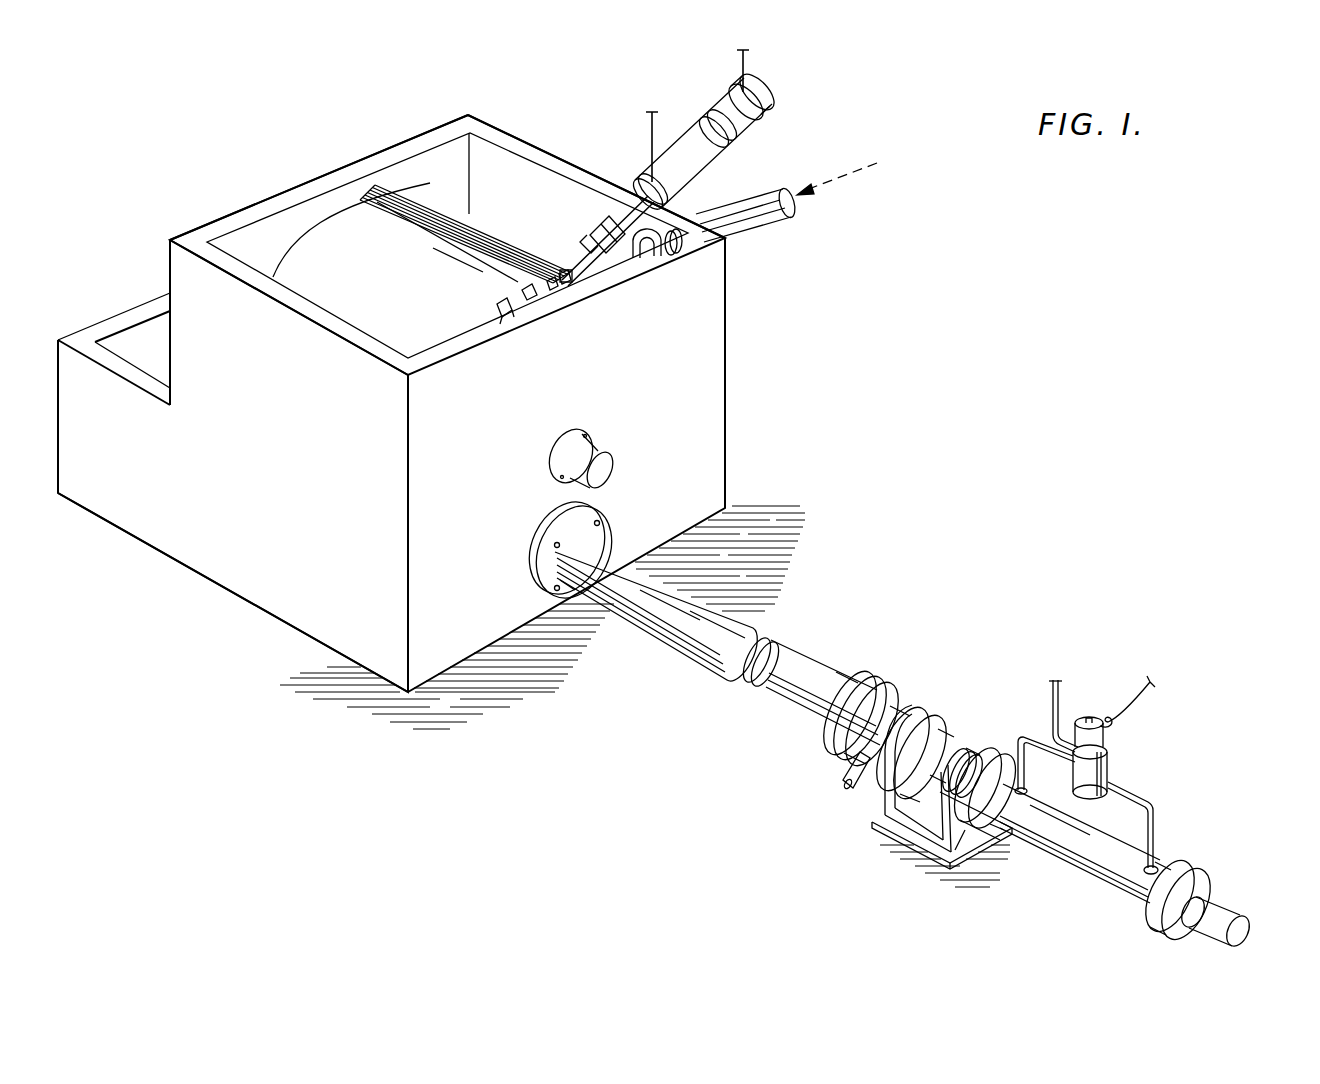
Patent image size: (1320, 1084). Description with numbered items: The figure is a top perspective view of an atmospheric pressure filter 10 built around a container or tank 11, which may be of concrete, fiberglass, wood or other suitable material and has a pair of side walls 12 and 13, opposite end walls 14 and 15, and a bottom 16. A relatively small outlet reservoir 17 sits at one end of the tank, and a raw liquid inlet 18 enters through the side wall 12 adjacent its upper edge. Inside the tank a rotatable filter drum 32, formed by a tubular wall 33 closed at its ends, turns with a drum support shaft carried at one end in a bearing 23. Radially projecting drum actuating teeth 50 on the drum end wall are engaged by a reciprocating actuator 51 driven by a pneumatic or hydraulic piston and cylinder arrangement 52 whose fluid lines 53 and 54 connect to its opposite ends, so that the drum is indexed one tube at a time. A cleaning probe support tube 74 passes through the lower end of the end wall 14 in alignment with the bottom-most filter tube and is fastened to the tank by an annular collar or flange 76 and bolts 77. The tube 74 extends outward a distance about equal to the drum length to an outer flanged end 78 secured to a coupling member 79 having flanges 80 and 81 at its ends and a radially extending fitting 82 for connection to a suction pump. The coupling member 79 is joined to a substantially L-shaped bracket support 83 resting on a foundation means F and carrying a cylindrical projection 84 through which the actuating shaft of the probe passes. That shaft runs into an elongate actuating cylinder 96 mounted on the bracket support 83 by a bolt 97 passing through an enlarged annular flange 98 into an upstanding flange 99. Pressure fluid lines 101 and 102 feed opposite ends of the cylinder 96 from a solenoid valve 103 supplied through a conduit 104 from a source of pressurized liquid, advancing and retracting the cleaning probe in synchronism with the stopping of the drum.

The atmospheric pressure filter 10 is at (839, 289).
The container or tank 11 is at (728, 367).
The side wall 12 is at (528, 143).
The side wall 13 is at (300, 317).
The end wall 14 is at (663, 262).
The end wall 15 is at (281, 192).
The bottom 16 is at (292, 595).
The outlet reservoir 17 is at (141, 302).
The raw liquid inlet 18 is at (708, 207).
The bearing 23 is at (590, 451).
The rotatable filter drum 32 is at (480, 228).
The tubular wall 33 is at (373, 207).
The drum actuating teeth 50 is at (505, 300).
The reciprocating actuator 51 is at (552, 264).
The piston and cylinder arrangement 52 is at (725, 148).
The fluid line 53 is at (655, 128).
The fluid line 54 is at (747, 68).
The cleaning probe support tube 74 is at (738, 622).
The annular collar or flange 76 is at (570, 590).
The bolts 77 is at (560, 545).
The outer flanged end 78 is at (866, 675).
The coupling member 79 is at (897, 703).
The flange 80 is at (884, 682).
The flange 81 is at (924, 705).
The radially extending fitting 82 is at (843, 772).
The L-shaped bracket support 83 is at (947, 733).
The cylindrical projection 84 is at (936, 746).
The actuating cylinder 96 is at (1073, 868).
The bolt 97 is at (965, 832).
The enlarged annular flange 98 is at (988, 753).
The upstanding flange 99 is at (995, 841).
The pressure fluid line 101 is at (1155, 803).
The pressure fluid line 102 is at (1045, 765).
The solenoid valve 103 is at (1110, 768).
The conduit 104 is at (1060, 696).
The foundation means F is at (905, 826).